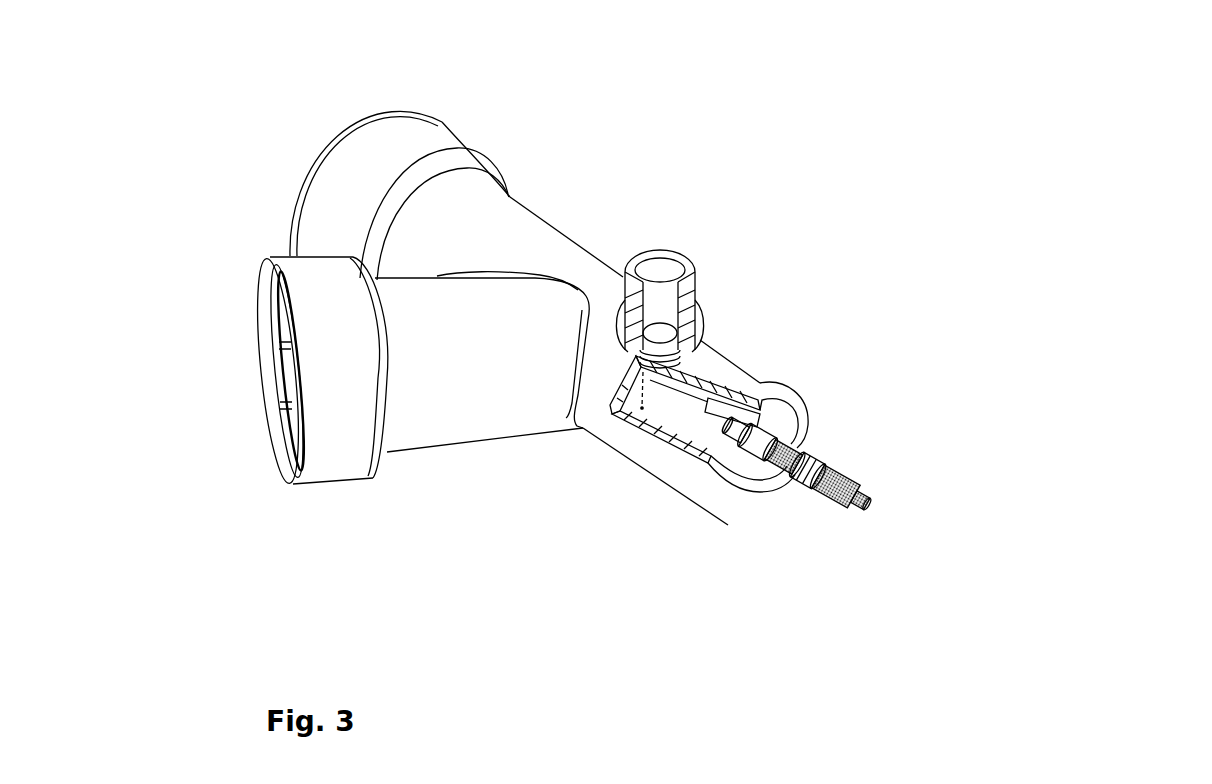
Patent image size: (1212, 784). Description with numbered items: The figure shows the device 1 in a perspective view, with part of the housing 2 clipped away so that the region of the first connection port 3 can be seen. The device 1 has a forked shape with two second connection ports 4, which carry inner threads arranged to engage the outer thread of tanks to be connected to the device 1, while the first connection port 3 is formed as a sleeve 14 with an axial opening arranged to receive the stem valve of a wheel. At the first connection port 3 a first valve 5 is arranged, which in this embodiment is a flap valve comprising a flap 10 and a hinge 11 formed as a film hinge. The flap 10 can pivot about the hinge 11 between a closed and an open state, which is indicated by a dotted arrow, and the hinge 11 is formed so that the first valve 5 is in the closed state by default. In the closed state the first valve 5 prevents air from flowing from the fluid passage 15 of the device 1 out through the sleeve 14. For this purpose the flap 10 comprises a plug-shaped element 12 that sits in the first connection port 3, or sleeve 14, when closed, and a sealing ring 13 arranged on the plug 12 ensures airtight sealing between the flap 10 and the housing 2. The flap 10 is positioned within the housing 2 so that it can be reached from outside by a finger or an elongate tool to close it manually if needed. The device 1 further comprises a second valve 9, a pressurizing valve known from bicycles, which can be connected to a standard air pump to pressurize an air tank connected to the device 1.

The device 1 is at (192, 113).
The housing 2 is at (463, 250).
The first connection port 3 is at (662, 282).
The second connection ports 4 is at (322, 147).
The first valve 5 is at (659, 399).
The second valve 9 is at (852, 507).
The flap 10 is at (677, 372).
The hinge 11 is at (793, 418).
The plug-shaped element 12 is at (656, 333).
The sealing ring 13 is at (670, 357).
The sleeve 14 is at (684, 302).
The fluid passage 15 is at (675, 418).